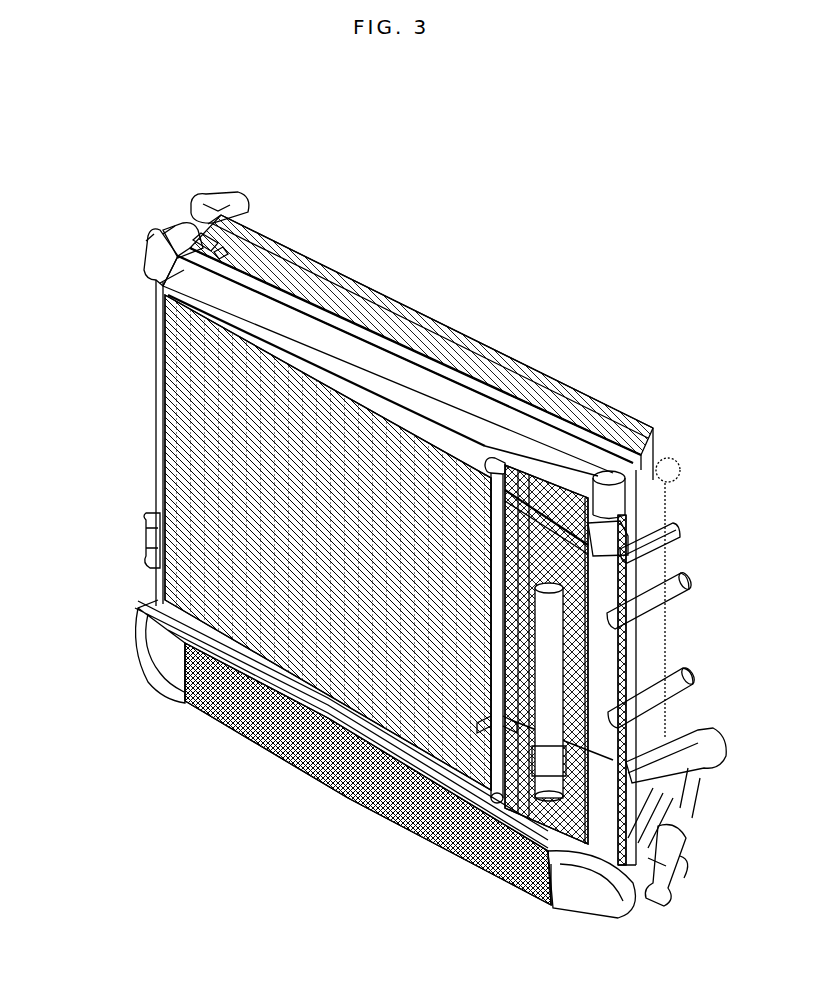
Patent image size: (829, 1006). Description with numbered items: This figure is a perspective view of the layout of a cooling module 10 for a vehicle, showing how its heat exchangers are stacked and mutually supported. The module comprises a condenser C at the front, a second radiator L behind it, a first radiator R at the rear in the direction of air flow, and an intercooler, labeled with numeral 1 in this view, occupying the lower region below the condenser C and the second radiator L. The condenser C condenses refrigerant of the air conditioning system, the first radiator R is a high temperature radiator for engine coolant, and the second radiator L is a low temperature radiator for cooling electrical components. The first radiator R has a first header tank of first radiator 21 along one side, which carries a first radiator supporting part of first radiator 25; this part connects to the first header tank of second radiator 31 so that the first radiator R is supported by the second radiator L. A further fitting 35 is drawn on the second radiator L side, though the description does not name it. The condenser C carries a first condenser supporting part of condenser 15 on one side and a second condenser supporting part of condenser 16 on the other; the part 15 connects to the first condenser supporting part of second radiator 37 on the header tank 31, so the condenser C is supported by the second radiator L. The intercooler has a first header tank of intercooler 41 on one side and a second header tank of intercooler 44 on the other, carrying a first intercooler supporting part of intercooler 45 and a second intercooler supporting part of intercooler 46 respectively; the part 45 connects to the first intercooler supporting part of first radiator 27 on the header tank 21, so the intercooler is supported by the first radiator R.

The heat exchanger 1 is at (331, 805).
The cooling module 10 is at (580, 292).
The first condenser supporting part of condenser 15 is at (520, 458).
The second condenser supporting part of condenser 16 is at (146, 286).
The first header tank of first radiator 21 is at (652, 486).
The first radiator supporting part of first radiator 25 is at (663, 537).
The first intercooler supporting part of first radiator 27 is at (660, 775).
The first header tank of second radiator 31 is at (655, 668).
The pipe 35 is at (658, 576).
The first condenser supporting part of second radiator 37 is at (646, 450).
The first header tank of intercooler 41 is at (560, 892).
The second header tank of intercooler 44 is at (146, 645).
The first intercooler supporting part of intercooler 45 is at (648, 892).
The second intercooler supporting part of intercooler 46 is at (140, 548).
The first radiator R is at (181, 179).
The second radiator L is at (148, 204).
The condenser C is at (105, 238).